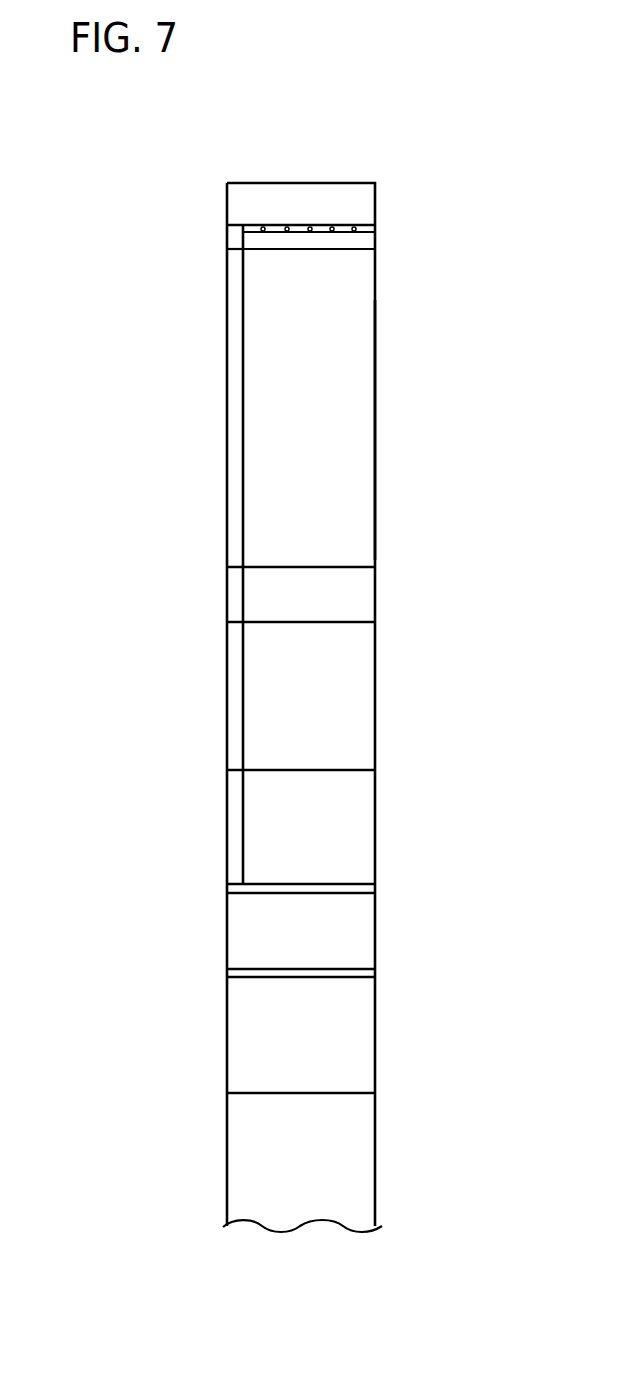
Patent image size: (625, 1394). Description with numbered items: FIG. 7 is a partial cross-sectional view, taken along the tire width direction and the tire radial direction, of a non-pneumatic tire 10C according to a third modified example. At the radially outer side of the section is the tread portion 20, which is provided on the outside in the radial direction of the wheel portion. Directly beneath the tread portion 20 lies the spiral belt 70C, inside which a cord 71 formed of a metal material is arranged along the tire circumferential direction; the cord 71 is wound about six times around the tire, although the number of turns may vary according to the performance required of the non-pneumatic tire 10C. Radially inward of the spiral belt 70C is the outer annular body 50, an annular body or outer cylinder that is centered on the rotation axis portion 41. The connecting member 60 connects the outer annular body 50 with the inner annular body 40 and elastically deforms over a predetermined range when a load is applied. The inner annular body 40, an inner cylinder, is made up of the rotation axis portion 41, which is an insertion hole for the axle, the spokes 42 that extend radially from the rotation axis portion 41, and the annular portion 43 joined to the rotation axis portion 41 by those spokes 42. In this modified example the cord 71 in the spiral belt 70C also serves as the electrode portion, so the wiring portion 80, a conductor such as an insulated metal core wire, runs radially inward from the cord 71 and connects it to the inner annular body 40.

The non-pneumatic tire 10C is at (393, 126).
The tread portion 20 is at (375, 203).
The spiral belt 70C is at (375, 227).
The outer annular body 50 is at (375, 238).
The cord 71 is at (308, 233).
The wiring portion 80 is at (243, 418).
The connecting member 60 is at (375, 425).
The annular portion 43 is at (363, 599).
The spokes 42 is at (375, 690).
The rotation axis portion 41 is at (375, 975).
The inner annular body 40 is at (482, 585).